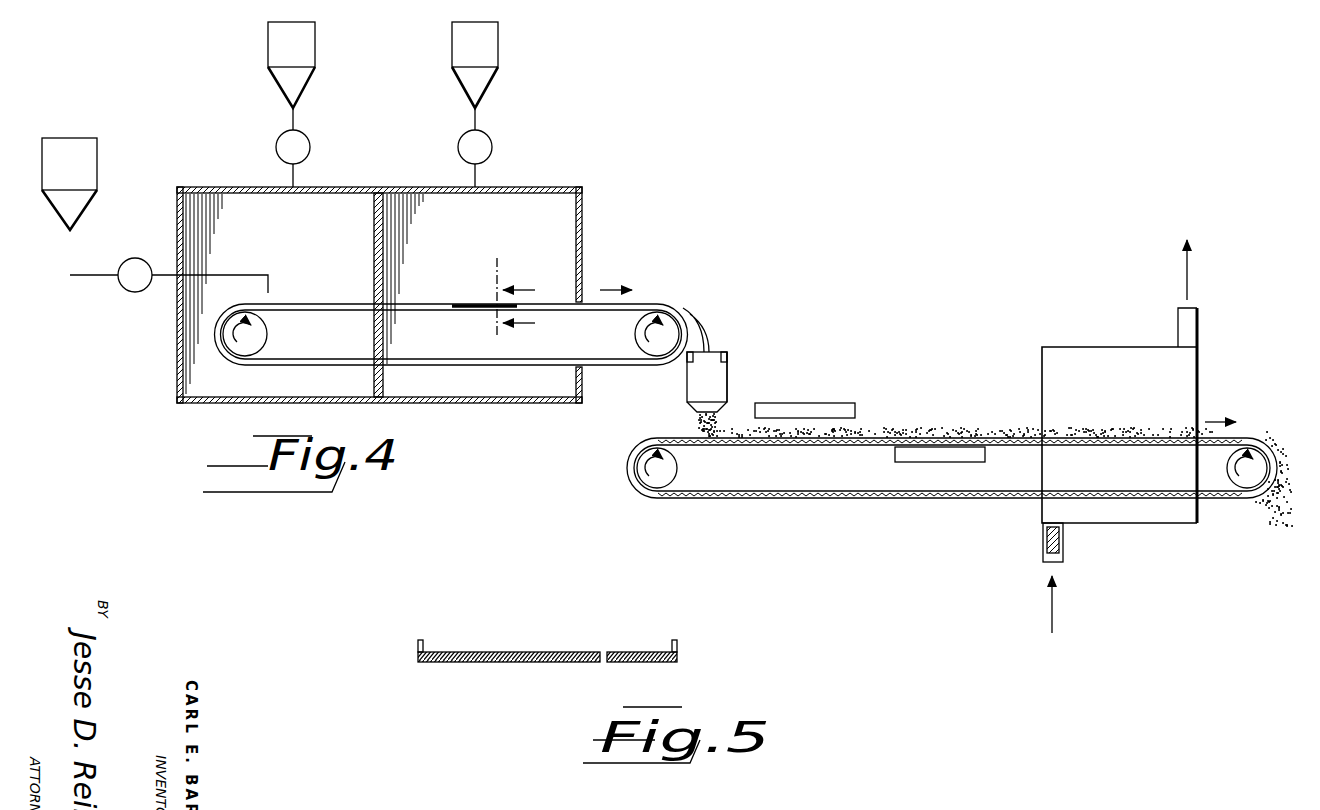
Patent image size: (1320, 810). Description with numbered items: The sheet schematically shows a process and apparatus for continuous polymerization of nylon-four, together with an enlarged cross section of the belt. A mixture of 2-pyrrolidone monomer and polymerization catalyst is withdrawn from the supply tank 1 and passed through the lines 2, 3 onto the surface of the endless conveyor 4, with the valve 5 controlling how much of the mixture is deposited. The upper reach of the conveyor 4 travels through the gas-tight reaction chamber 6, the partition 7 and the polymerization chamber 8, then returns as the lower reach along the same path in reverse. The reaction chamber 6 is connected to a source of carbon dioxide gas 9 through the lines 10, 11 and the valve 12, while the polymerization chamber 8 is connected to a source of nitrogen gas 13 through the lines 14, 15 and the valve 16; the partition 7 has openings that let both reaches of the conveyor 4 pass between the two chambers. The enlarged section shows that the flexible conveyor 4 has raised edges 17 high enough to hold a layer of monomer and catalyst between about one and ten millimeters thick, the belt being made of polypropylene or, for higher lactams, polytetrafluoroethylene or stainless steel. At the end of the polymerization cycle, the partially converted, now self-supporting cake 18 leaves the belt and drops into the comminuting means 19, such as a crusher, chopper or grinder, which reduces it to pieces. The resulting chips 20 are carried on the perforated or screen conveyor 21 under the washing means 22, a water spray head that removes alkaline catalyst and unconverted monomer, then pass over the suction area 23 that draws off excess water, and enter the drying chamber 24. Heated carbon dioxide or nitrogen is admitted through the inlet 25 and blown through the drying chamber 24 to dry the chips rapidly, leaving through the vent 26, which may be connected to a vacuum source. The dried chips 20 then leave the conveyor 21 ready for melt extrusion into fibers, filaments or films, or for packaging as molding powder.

In FIG. 4, the supply tank 1 is at (97, 140).
In FIG. 4, the line 2 is at (70, 251).
In FIG. 4, the line 3 is at (160, 270).
In FIG. 4, the endless conveyor 4 is at (323, 305).
In FIG. 5, the endless conveyor 4 is at (525, 666).
In FIG. 4, the valve 5 is at (139, 258).
In FIG. 4, the reaction chamber 6 is at (352, 187).
In FIG. 4, the partition 7 is at (381, 193).
In FIG. 4, the polymerization chamber 8 is at (412, 187).
In FIG. 4, the source of CO2 gas 9 is at (316, 64).
In FIG. 4, the line 10 is at (294, 122).
In FIG. 4, the line 11 is at (292, 176).
In FIG. 4, the valve 12 is at (311, 152).
In FIG. 4, the source of nitrogen gas 13 is at (498, 62).
In FIG. 4, the line 14 is at (476, 122).
In FIG. 4, the line 15 is at (477, 174).
In FIG. 4, the valve 16 is at (459, 148).
In FIG. 4, the edges 17 is at (468, 304).
In FIG. 5, the edges 17 is at (418, 646).
In FIG. 4, the cake 18 is at (703, 350).
In FIG. 4, the comminuting means 19 is at (728, 355).
In FIG. 4, the chips 20 is at (700, 420).
In FIG. 4, the conveyor 21 is at (794, 492).
In FIG. 4, the washing means 22 is at (857, 410).
In FIG. 4, the suction area 23 is at (893, 458).
In FIG. 4, the drying chamber 24 is at (1112, 347).
In FIG. 4, the inlet 25 is at (1043, 553).
In FIG. 4, the vent 26 is at (1178, 325).